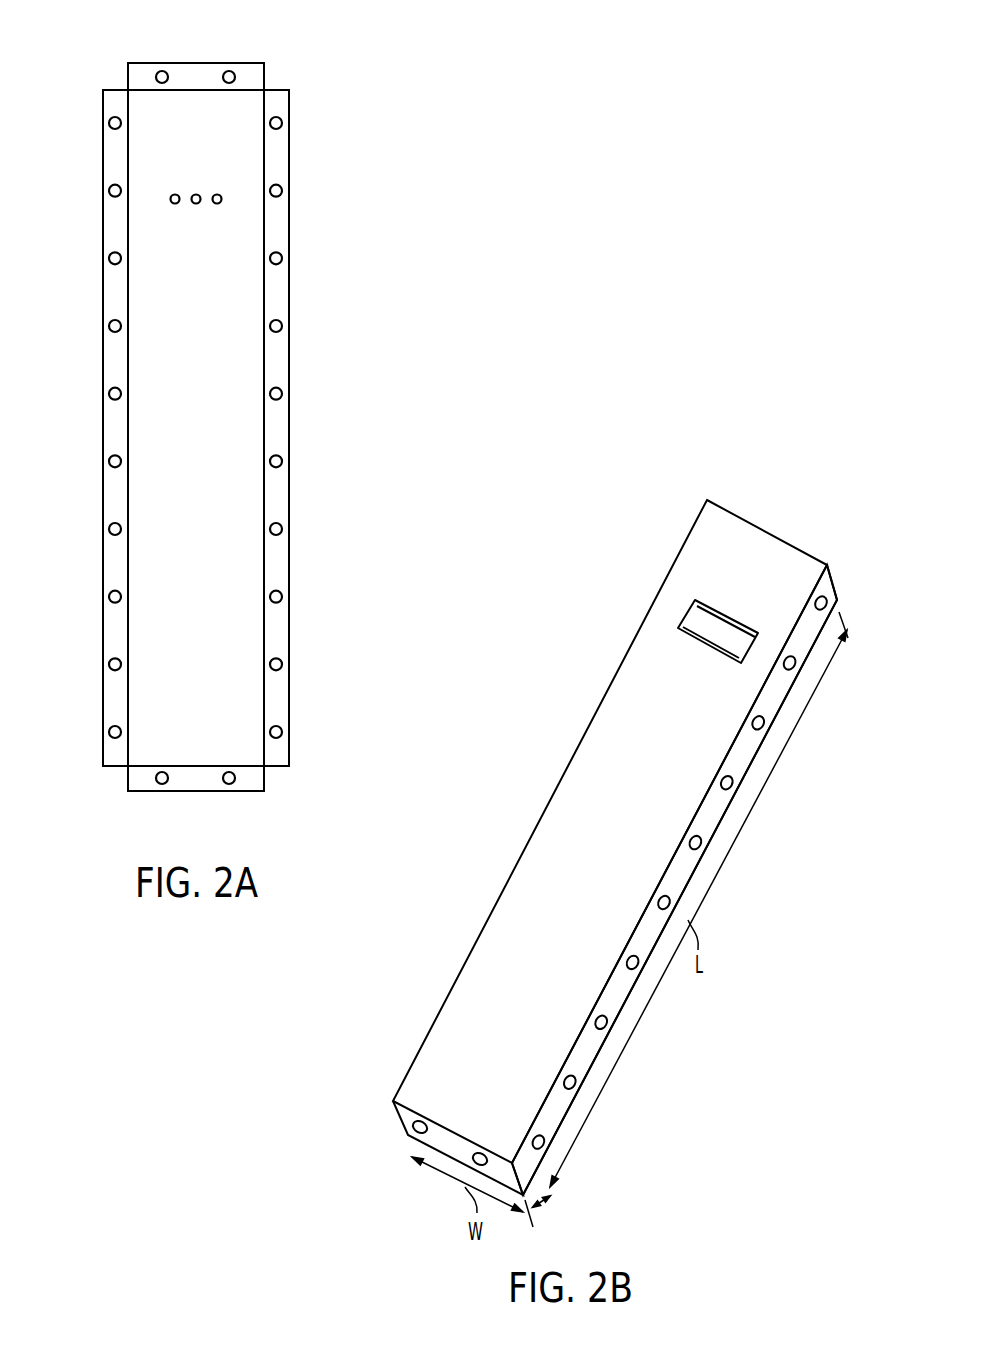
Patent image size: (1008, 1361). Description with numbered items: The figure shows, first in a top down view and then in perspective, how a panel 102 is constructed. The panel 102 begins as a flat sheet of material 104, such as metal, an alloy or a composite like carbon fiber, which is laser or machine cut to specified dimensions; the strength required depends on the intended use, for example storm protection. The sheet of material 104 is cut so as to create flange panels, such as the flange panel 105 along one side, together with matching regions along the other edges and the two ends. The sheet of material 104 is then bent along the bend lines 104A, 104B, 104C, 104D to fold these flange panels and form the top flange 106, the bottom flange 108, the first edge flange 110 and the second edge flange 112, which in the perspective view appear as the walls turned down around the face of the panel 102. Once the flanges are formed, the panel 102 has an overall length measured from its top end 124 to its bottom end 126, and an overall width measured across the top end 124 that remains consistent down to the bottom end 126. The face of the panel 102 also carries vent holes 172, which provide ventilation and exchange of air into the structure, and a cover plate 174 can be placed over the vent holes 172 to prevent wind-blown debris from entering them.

In FIG. 2B, the panel 102 is at (787, 495).
In FIG. 2A, the sheet of material 104 is at (347, 93).
In FIG. 2A, the bend line 104A is at (249, 88).
In FIG. 2A, the bend line 104B is at (265, 572).
In FIG. 2A, the bend line 104C is at (150, 767).
In FIG. 2A, the bend line 104D is at (128, 365).
In FIG. 2A, the flange panel 105 is at (282, 433).
In FIG. 2A, the top flange 106 is at (187, 73).
In FIG. 2A, the bottom flange 108 is at (206, 793).
In FIG. 2A, the first edge flange 110 is at (102, 208).
In FIG. 2A, the second edge flange 112 is at (290, 239).
In FIG. 2B, the top end 124 is at (838, 565).
In FIG. 2B, the bottom end 126 is at (550, 1198).
In FIG. 2A, the vent holes 172 is at (236, 193).
In FIG. 2B, the cover plate 174 is at (695, 622).